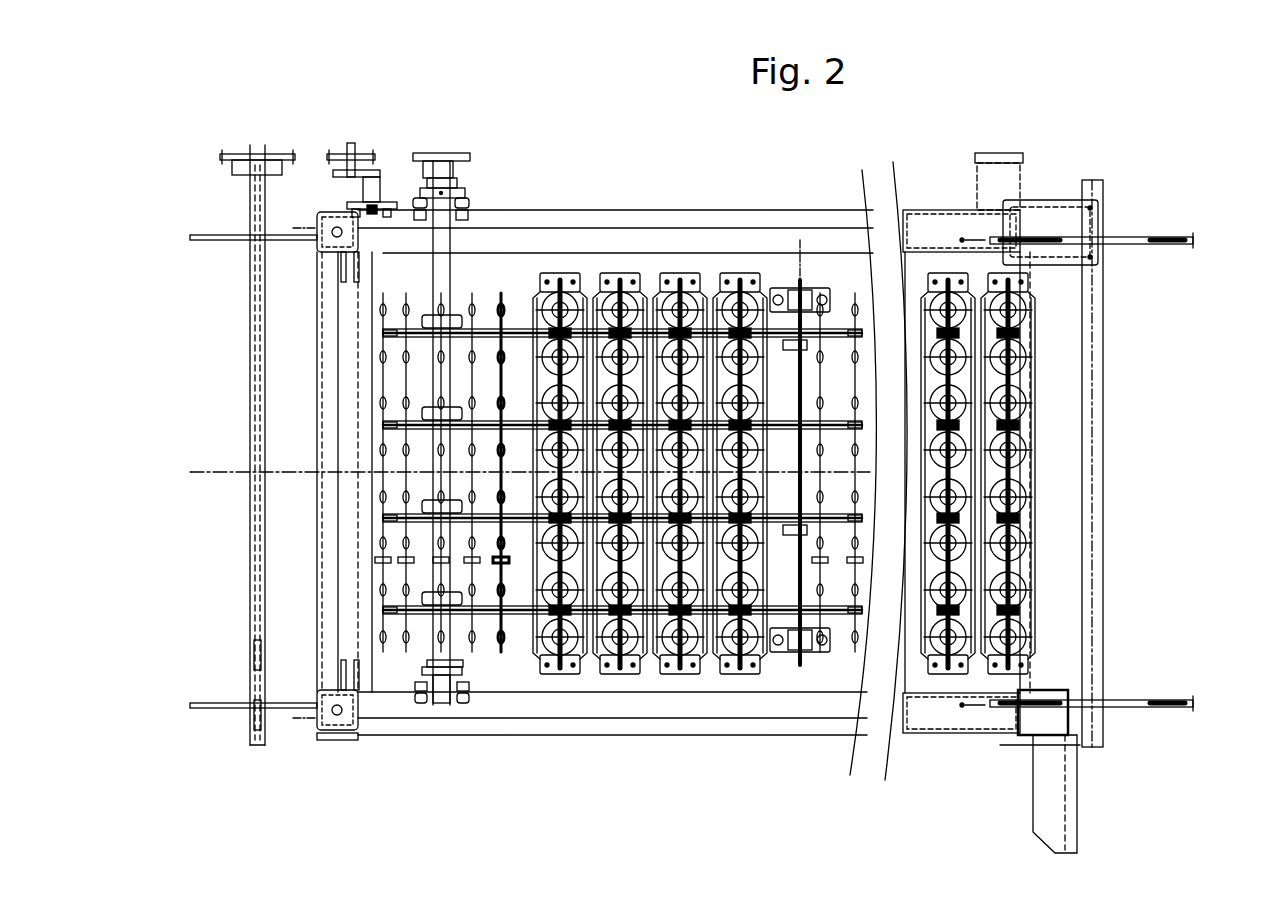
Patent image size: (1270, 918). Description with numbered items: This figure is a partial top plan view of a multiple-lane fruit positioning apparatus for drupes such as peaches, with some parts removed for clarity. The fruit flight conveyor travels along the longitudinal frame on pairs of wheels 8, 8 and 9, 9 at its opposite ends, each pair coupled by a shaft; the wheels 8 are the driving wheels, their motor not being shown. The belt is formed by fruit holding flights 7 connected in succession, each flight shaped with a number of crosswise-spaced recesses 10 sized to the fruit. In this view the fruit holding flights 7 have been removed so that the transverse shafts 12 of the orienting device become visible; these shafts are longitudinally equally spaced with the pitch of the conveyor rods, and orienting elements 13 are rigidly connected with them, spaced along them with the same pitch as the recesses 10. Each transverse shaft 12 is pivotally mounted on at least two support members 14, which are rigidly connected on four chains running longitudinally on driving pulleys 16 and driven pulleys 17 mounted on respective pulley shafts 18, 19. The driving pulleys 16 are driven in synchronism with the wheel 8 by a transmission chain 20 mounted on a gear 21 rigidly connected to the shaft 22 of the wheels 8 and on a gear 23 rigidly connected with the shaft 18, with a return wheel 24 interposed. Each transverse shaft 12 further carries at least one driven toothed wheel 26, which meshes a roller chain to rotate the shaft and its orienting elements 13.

The fruit holding flight 7 is at (735, 275).
The wheel 8 is at (205, 237).
The wheel 9 is at (1165, 238).
The recess 10 is at (575, 280).
The transverse shaft 12 is at (478, 290).
The orienting element 13 is at (476, 640).
The support member 14 is at (530, 640).
The driving pulley 16 is at (385, 333).
The driven pulley 17 is at (832, 280).
The pulley shaft 18 is at (445, 640).
The pulley shaft 19 is at (830, 655).
The transmission chain 20 is at (310, 157).
The gear 21 is at (220, 157).
The shaft 22 is at (250, 298).
The gear 23 is at (468, 157).
The return wheel 24 is at (377, 170).
The driven toothed wheel 26 is at (378, 563).